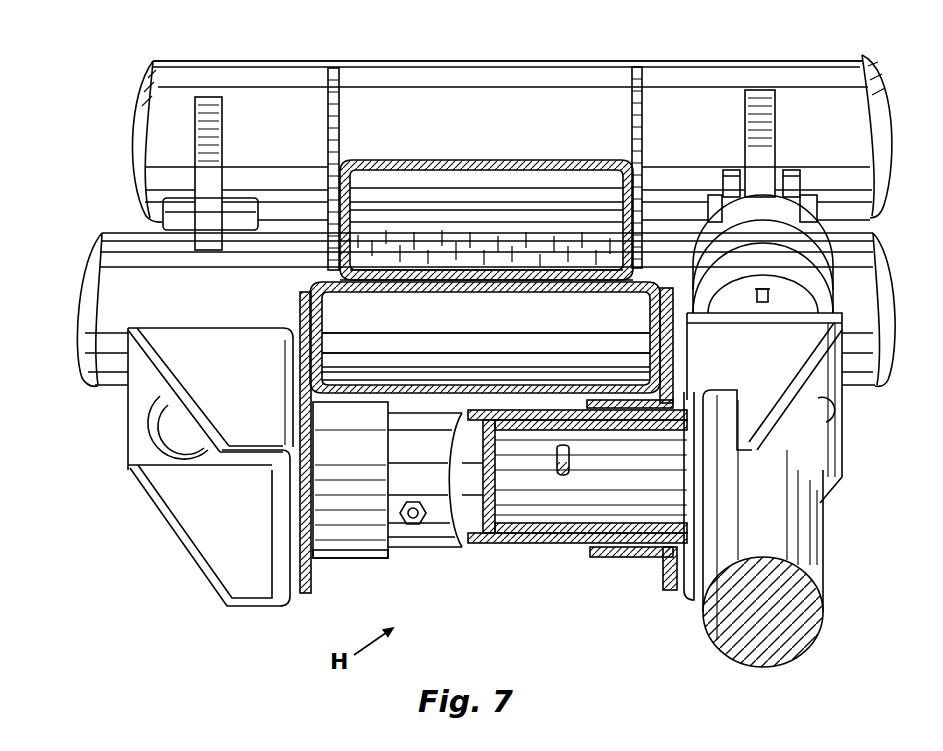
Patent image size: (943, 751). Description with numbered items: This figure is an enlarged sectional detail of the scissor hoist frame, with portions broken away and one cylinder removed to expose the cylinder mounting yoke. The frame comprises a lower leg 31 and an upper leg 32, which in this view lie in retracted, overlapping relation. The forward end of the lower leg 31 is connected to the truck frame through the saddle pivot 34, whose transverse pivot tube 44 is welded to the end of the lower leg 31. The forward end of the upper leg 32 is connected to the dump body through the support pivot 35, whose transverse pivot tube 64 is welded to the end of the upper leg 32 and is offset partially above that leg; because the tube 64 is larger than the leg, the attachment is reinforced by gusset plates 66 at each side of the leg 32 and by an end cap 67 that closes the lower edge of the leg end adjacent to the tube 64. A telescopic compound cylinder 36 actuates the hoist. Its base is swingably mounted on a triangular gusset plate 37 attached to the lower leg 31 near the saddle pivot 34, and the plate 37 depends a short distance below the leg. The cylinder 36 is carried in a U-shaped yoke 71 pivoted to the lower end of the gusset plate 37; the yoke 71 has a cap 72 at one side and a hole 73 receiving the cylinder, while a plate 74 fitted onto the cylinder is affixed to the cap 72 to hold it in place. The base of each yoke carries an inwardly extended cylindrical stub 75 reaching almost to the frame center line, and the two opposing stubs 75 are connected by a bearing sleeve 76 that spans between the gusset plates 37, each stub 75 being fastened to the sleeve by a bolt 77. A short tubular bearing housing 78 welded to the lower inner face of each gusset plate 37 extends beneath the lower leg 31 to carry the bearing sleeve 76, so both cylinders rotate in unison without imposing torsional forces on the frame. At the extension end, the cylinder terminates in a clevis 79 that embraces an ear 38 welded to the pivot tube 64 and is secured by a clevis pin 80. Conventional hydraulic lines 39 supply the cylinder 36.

The support pivot 35 is at (258, 57).
The transverse pivot tube 64 is at (527, 87).
The gusset plates 66 is at (338, 106).
The ear 38 is at (217, 114).
The clevis pin 80 is at (245, 208).
The clevis 79 is at (792, 172).
The upper leg 32 is at (560, 172).
The saddle pivot 34 is at (97, 227).
The lower leg 31 is at (572, 386).
The end cap 67 is at (460, 280).
The gusset plate 37 is at (656, 337).
The transverse pivot tube 44 is at (262, 300).
The hole 73 is at (150, 425).
The cap 72 is at (145, 450).
The yoke 71 is at (178, 492).
The bearing sleeve 76 is at (410, 456).
The cylindrical stub 75 is at (466, 508).
The tubular bearing housing 78 is at (366, 548).
The bolt 77 is at (407, 506).
The plate 74 is at (744, 318).
The hydraulic lines 39 is at (763, 306).
The telescopic compound cylinder 36 is at (797, 515).